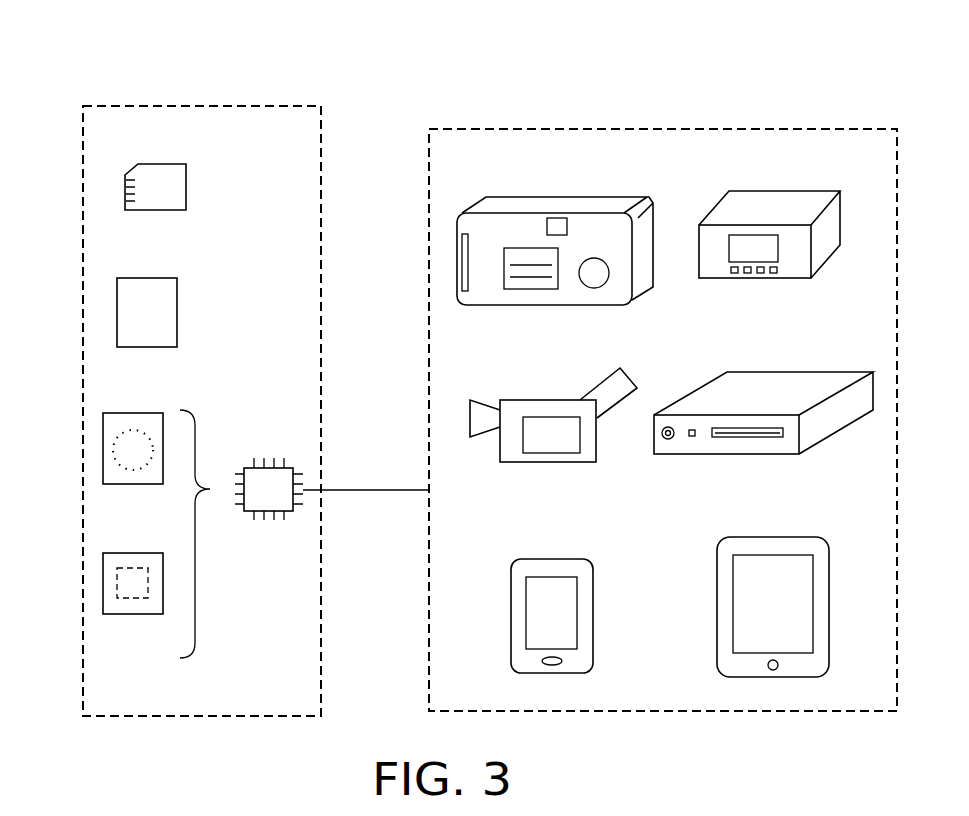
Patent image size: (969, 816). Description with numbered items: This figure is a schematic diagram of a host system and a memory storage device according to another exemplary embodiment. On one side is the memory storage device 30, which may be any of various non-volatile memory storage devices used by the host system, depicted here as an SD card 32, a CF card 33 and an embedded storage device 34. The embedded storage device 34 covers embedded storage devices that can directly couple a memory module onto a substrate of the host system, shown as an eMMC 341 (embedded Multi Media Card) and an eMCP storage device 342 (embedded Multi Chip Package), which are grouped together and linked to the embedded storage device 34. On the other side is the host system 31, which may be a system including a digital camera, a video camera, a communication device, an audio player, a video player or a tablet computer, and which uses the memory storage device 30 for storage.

The memory storage device 30 is at (191, 104).
The host system 31 is at (590, 128).
The SD card 32 is at (125, 193).
The CF card 33 is at (117, 315).
The embedded storage device 34 is at (268, 460).
The eMMC 341 is at (103, 451).
The eMCP storage device 342 is at (102, 584).